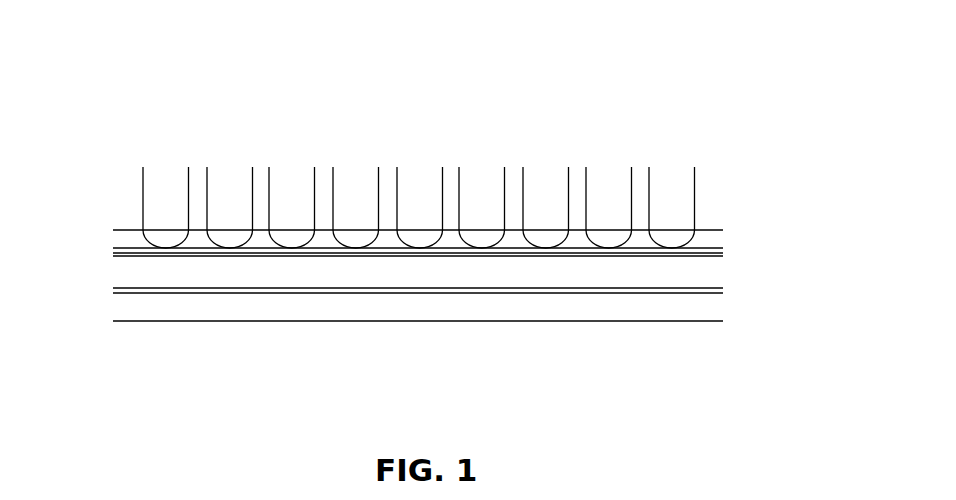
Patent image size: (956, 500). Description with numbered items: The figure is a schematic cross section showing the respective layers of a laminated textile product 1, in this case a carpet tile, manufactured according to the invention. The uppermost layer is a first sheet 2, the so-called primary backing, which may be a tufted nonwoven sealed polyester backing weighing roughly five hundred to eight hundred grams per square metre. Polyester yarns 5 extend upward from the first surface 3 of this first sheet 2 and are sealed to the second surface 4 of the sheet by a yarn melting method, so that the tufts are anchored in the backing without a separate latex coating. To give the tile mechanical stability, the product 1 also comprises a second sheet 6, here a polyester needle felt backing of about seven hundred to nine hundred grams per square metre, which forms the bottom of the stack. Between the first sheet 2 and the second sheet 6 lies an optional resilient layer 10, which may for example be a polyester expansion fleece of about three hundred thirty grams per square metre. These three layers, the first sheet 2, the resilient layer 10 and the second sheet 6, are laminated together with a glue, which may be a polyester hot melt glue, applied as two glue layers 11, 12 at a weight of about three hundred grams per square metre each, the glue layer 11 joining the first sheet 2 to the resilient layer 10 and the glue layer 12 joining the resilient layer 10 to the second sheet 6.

The laminated textile product 1 is at (140, 128).
The first sheet 2 is at (113, 240).
The first surface 3 is at (714, 227).
The second surface 4 is at (709, 265).
The polyester yarns 5 is at (333, 173).
The second sheet 6 is at (432, 312).
The resilient layer 10 is at (120, 272).
The glue layer 11 is at (723, 248).
The glue layer 12 is at (723, 291).